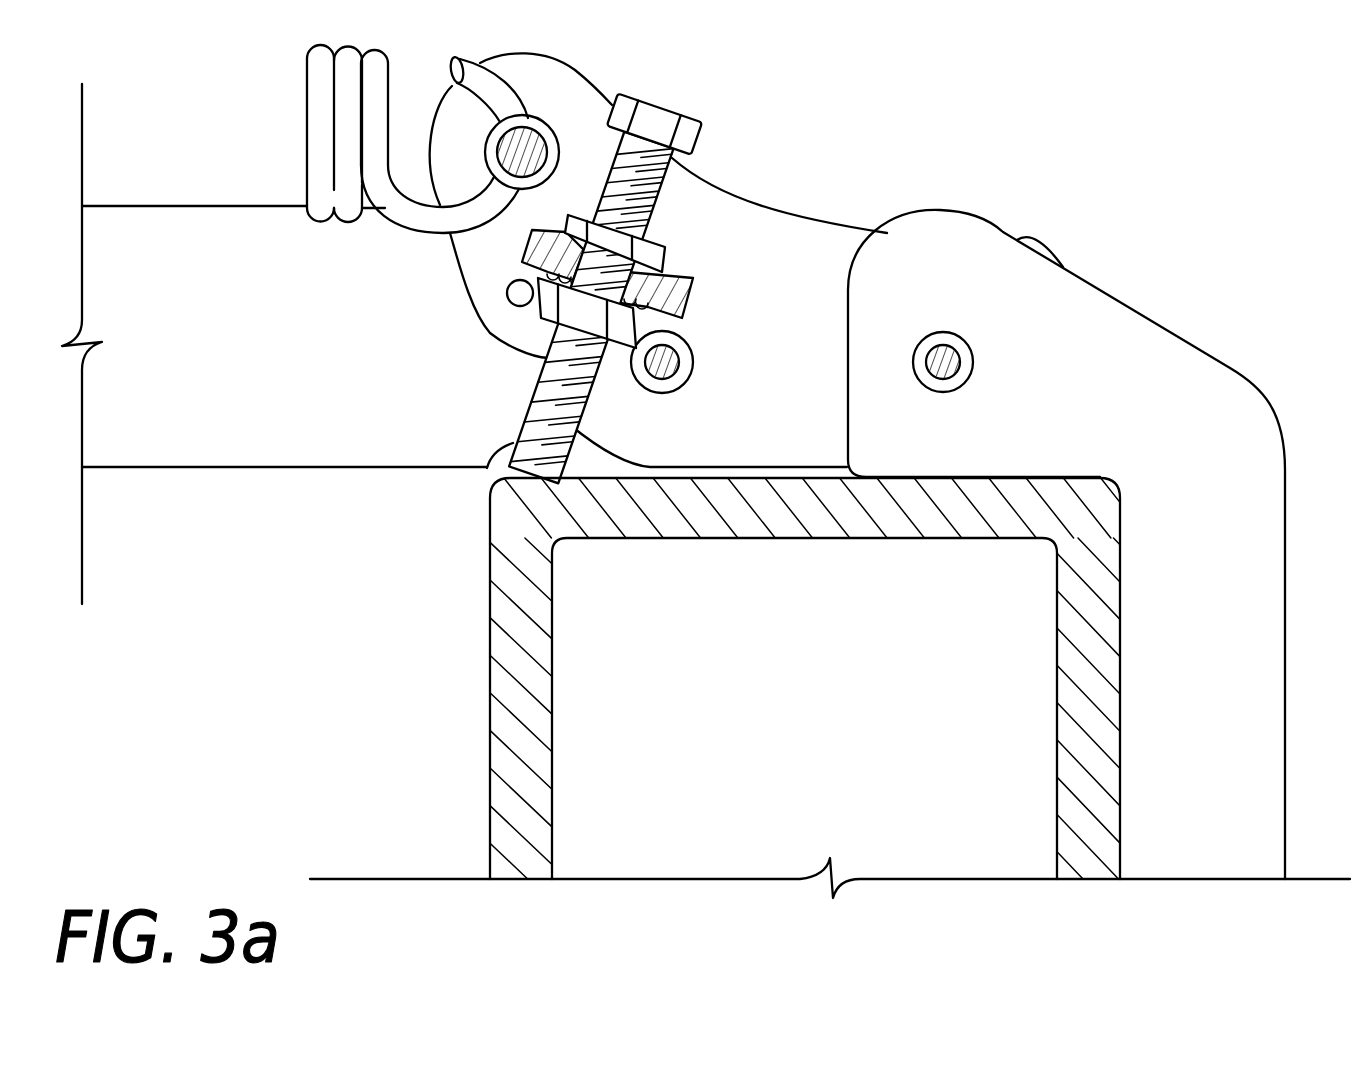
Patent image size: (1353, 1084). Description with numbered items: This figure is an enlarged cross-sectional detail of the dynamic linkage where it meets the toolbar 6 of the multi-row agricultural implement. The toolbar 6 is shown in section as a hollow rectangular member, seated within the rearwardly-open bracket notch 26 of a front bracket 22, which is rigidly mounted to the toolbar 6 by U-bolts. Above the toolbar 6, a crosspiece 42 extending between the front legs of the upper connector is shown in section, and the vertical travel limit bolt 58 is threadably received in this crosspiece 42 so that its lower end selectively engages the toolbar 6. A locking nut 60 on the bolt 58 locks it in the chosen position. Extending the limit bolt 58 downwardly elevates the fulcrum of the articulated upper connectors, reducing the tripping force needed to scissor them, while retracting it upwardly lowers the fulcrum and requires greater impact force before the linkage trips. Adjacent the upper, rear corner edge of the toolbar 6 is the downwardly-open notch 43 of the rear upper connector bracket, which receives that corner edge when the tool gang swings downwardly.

The toolbar 6 is at (490, 745).
The front bracket 22 is at (1180, 330).
The bracket notch 26 is at (1118, 760).
The crosspiece 42 is at (695, 288).
The downwardly-open notch 43 is at (582, 455).
The vertical travel limit bolt 58 is at (698, 120).
The locking nut 60 is at (665, 235).